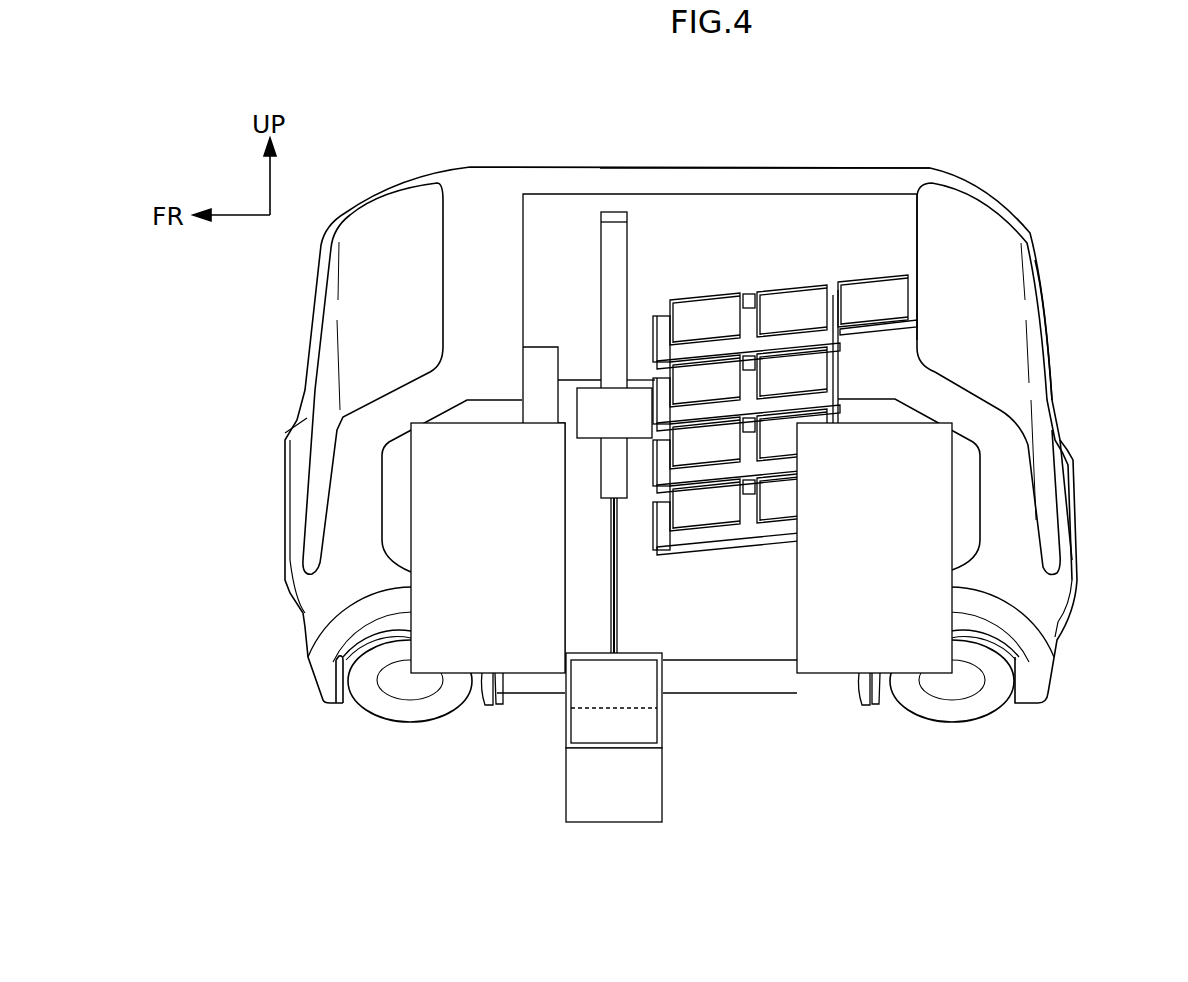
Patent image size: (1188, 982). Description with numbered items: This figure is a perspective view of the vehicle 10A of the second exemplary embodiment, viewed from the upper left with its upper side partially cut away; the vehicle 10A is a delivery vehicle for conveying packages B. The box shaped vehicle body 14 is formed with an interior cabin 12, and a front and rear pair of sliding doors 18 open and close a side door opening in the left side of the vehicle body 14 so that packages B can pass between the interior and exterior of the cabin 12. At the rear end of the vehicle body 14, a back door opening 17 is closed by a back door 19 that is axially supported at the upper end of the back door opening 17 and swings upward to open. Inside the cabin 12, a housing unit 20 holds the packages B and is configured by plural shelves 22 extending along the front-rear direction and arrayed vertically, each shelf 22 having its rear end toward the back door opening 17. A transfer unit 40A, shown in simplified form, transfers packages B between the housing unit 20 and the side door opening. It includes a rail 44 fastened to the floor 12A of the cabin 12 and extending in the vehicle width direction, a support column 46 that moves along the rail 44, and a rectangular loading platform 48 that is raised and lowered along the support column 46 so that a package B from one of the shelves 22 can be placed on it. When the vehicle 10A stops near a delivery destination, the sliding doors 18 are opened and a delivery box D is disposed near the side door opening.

The vehicle 10A is at (1017, 133).
The cabin 12 is at (697, 240).
The floor 12A is at (738, 601).
The vehicle body 14 is at (823, 171).
The back door opening 17 is at (1045, 448).
The sliding doors 18 is at (470, 625).
The back door 19 is at (1048, 357).
The housing unit 20 is at (800, 265).
The shelves 22 is at (660, 322).
The transfer unit 40A is at (547, 702).
The rail 44 is at (620, 605).
The support column 46 is at (610, 240).
The loading platform 48 is at (593, 405).
The packages B is at (713, 315).
The delivery box D is at (615, 808).